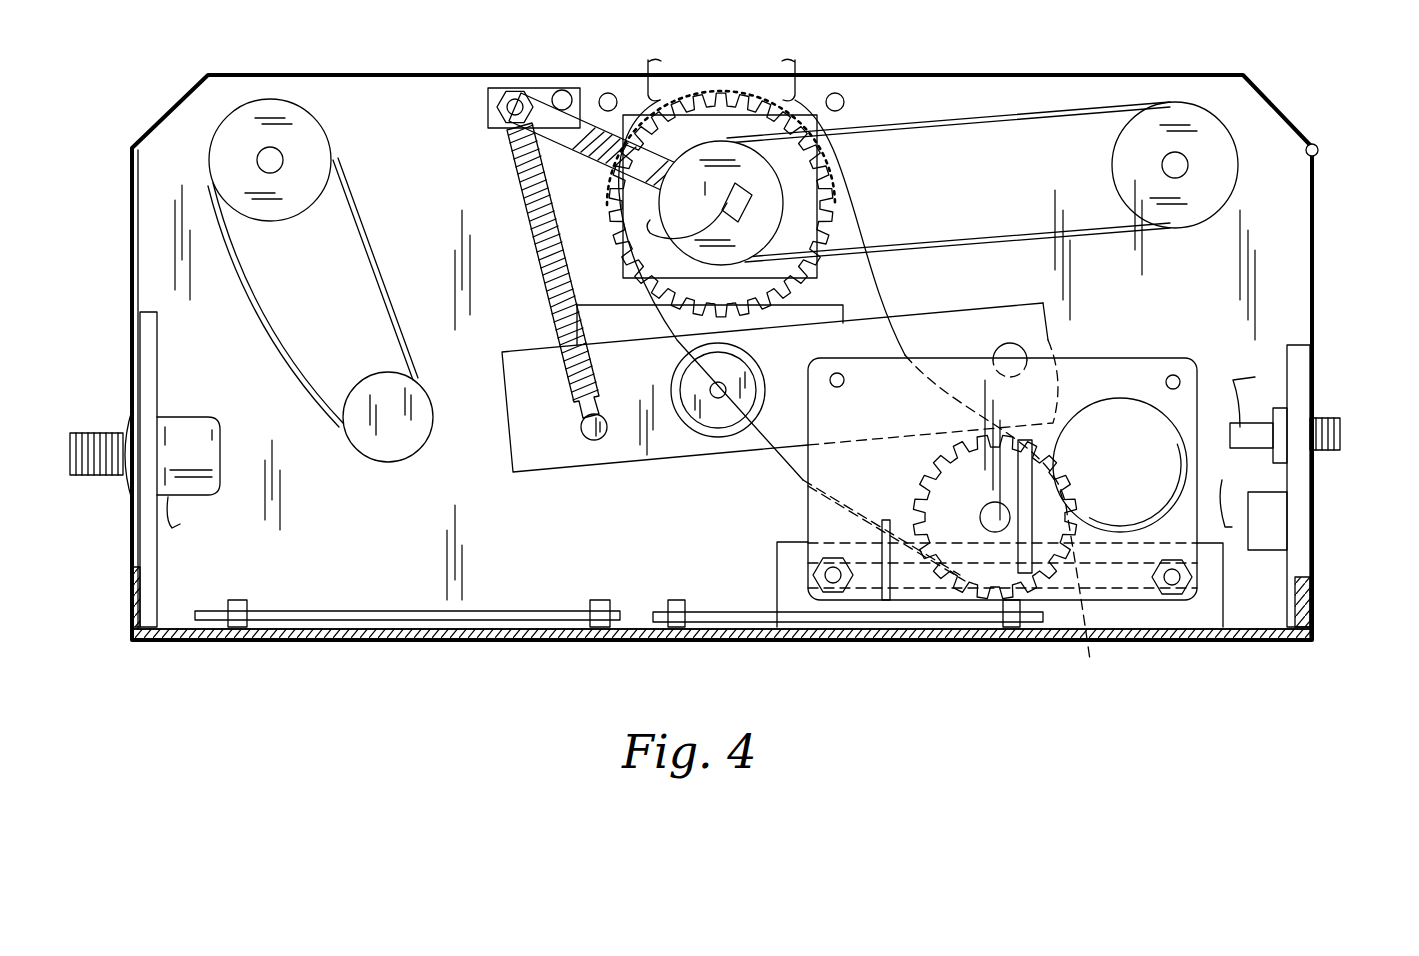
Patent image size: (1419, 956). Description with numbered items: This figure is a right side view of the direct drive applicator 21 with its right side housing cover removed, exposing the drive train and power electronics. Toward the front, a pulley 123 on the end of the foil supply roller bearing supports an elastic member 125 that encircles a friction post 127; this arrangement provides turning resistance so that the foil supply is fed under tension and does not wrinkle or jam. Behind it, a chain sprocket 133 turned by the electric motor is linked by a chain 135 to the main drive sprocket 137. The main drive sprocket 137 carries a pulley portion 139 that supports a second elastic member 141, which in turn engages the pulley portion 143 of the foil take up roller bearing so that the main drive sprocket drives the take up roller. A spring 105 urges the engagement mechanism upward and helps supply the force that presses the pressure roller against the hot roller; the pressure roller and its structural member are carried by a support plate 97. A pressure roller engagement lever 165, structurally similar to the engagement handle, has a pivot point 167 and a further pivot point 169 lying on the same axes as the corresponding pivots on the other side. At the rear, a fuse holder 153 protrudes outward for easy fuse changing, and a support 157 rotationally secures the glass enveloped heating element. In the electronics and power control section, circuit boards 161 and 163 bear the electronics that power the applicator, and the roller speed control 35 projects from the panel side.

The applicator 21 is at (280, 648).
The roller speed control 35 is at (80, 462).
The support plate 97 is at (627, 476).
The spring 105 is at (522, 160).
The pulley 123 is at (295, 112).
The elastic member 125 is at (275, 322).
The friction post 127 is at (385, 458).
The chain sprocket 133 is at (959, 530).
The chain 135 is at (870, 285).
The main drive sprocket 137 is at (727, 120).
The pulley portion 139 is at (687, 135).
The second elastic member 141 is at (1055, 112).
The pulley portion 143 is at (1185, 112).
The fuse holder 153 is at (1338, 420).
The support 157 is at (562, 100).
The circuit board 161 is at (400, 615).
The circuit board 163 is at (913, 616).
The pressure roller engagement lever 165 is at (540, 452).
The pivot point 167 is at (1015, 355).
The pivot point 169 is at (712, 400).